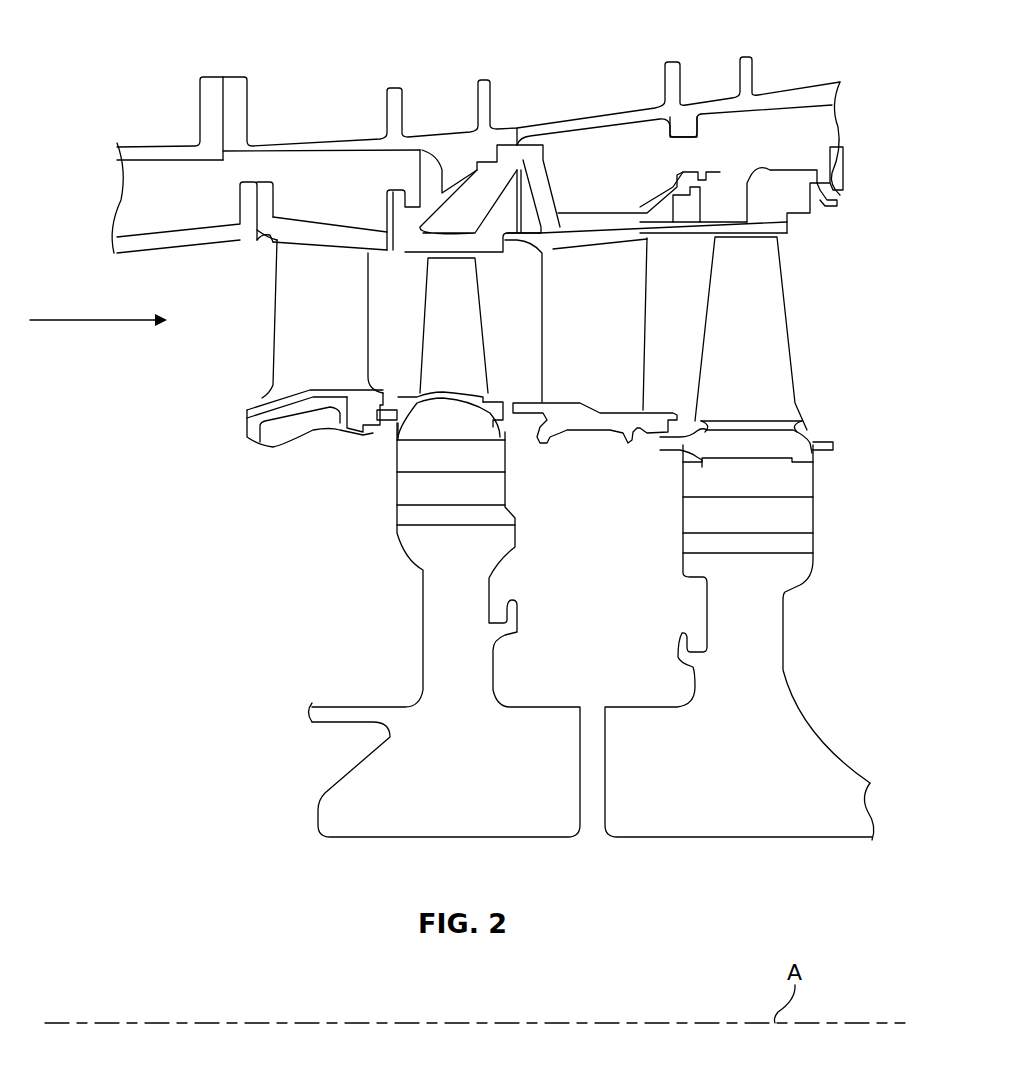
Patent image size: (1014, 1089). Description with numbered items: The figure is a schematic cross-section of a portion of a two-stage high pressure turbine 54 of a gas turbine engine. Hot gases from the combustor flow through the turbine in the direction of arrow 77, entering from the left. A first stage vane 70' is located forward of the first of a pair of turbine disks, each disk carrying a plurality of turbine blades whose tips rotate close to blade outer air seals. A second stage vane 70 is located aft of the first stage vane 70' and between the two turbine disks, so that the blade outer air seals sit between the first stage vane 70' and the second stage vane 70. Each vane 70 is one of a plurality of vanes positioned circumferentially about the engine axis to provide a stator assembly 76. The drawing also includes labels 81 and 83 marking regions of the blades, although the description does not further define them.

The high pressure turbine 54 is at (790, 31).
The high pressure turbine stage vane 70 is at (602, 340).
The first stage vane 70' is at (285, 343).
The stator assembly 76 is at (643, 205).
The arrow 77 is at (96, 320).
The leading edge region 81 is at (417, 378).
The trailing edge region 83 is at (795, 332).